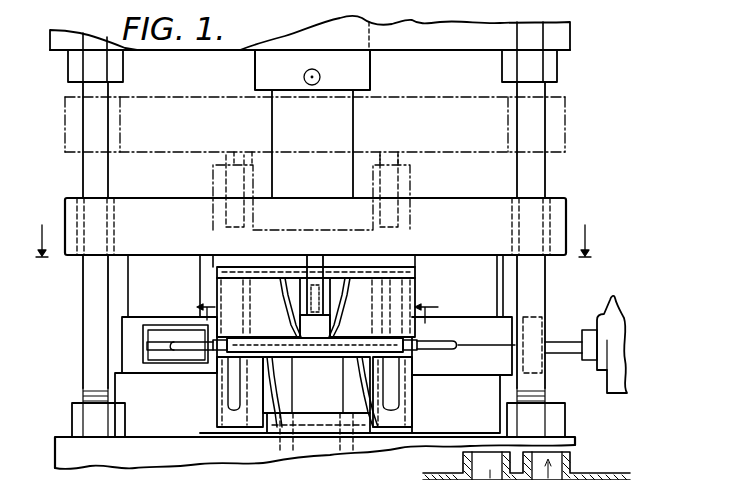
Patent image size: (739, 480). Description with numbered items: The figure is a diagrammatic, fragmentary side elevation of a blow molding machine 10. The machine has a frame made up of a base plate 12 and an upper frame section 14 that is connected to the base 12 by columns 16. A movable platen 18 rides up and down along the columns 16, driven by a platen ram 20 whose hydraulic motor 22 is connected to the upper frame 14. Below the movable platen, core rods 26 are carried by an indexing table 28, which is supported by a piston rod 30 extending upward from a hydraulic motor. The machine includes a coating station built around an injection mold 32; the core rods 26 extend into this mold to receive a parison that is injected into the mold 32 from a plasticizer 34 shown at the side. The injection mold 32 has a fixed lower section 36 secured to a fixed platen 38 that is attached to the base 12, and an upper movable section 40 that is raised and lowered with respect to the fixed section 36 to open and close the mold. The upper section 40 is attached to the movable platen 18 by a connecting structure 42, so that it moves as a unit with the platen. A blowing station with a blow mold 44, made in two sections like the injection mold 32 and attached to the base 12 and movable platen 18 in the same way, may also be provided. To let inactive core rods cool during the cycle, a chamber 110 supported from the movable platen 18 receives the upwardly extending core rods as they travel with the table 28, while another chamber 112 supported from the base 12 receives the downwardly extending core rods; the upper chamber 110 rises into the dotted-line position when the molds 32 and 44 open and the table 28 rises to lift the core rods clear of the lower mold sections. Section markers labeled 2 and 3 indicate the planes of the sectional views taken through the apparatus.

The blow molding machine 10 is at (70, 290).
The base plate 12 is at (437, 443).
The upper frame section 14 is at (58, 46).
The columns 16 is at (88, 183).
The movable platen 18 is at (434, 206).
The platen ram 20 is at (344, 127).
The hydraulic motor 22 is at (365, 70).
The core rods 26 is at (182, 348).
The indexing table 28 is at (273, 348).
The piston rod 30 is at (322, 407).
The injection mold 32 is at (481, 302).
The plasticizer 34 is at (612, 380).
The fixed lower section 36 is at (527, 352).
The fixed platen 38 is at (456, 404).
The upper movable section 40 is at (521, 325).
The connecting structure 42 is at (464, 265).
The blow mold 44 is at (162, 314).
The chamber 110 is at (214, 189).
The chamber 112 is at (220, 397).
The section line 2- 2 is at (314, 242).
The section line 3- 3 is at (319, 309).